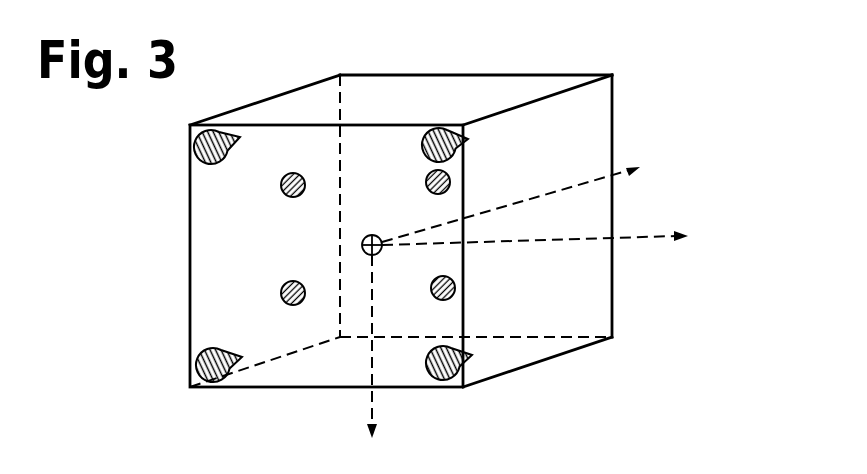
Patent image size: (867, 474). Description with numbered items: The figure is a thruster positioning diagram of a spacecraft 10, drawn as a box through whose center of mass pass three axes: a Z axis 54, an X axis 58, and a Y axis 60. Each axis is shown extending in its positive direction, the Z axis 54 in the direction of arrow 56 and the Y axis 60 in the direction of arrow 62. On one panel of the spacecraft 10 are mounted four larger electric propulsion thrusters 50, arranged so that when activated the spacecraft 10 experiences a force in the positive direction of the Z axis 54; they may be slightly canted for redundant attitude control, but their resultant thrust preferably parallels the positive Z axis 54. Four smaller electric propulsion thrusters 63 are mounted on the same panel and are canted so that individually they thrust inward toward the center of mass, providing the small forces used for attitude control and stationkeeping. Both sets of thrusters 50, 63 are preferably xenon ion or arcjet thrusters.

The spacecraft 10 is at (532, 60).
The electric propulsion thrusters 50 is at (193, 148).
The Z axis 54 is at (541, 195).
The arrow 56 is at (629, 160).
The X axis 58 is at (547, 243).
The Y axis 60 is at (371, 352).
The arrow 62 is at (378, 431).
The electric propulsion thrusters 63 is at (281, 187).